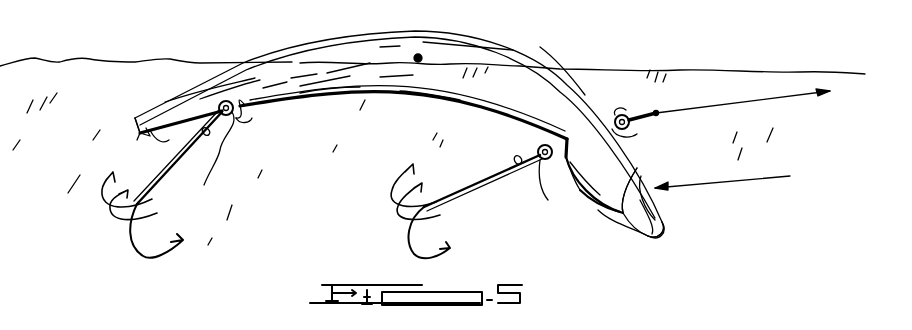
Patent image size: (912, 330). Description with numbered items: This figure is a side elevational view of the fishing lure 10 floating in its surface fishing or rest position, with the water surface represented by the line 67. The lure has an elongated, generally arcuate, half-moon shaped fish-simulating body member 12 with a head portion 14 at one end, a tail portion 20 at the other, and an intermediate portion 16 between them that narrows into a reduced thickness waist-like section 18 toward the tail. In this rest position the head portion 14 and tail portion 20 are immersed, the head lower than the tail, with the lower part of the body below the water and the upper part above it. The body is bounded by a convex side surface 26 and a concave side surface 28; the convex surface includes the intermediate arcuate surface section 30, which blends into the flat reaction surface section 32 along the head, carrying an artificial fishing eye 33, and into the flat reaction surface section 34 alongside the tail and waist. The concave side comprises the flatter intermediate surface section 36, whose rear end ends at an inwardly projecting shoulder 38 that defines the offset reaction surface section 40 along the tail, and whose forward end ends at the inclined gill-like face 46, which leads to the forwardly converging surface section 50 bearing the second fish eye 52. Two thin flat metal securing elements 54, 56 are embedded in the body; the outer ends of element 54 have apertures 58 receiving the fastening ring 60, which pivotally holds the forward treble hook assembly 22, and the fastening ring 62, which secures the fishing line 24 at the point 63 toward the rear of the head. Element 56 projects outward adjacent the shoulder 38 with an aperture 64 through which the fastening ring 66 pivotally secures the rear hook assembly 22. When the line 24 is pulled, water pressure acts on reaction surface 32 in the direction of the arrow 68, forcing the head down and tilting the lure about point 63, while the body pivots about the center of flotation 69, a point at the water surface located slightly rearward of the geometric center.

The fishing lure 10 is at (550, 59).
The body member 12 is at (458, 60).
The head portion 14 is at (664, 213).
The intermediate portion 16 is at (386, 96).
The waist-like section 18 is at (210, 88).
The tail portion 20 is at (148, 114).
The treble hook assemblies 22 is at (164, 190).
The fishing line 24 is at (776, 104).
The convex side surface 26 is at (432, 21).
The concave side surface 28 is at (338, 97).
The intermediate arcuate surface section 30 is at (507, 48).
The reaction surface section 32 is at (654, 193).
The artificial fishing eye 33 is at (639, 209).
The reaction surface section 34 is at (180, 100).
The intermediate surface section 36 is at (435, 104).
The shoulder 38 is at (273, 103).
The reaction surface section 40 is at (162, 136).
The inclined face 46 is at (568, 180).
The forwardly converging surface section 50 is at (647, 238).
The second fish eye 52 is at (601, 203).
The securing element 54 is at (610, 108).
The securing element 56 is at (222, 124).
The apertures 58 is at (538, 150).
The fastening ring 60 is at (549, 176).
The fastening ring 62 is at (656, 111).
The line attachment point 63 is at (637, 137).
The aperture 64 is at (243, 116).
The fastening ring 66 is at (203, 160).
The water surface line 67 is at (87, 62).
The arrow 68 is at (755, 180).
The center of flotation 69 is at (418, 58).